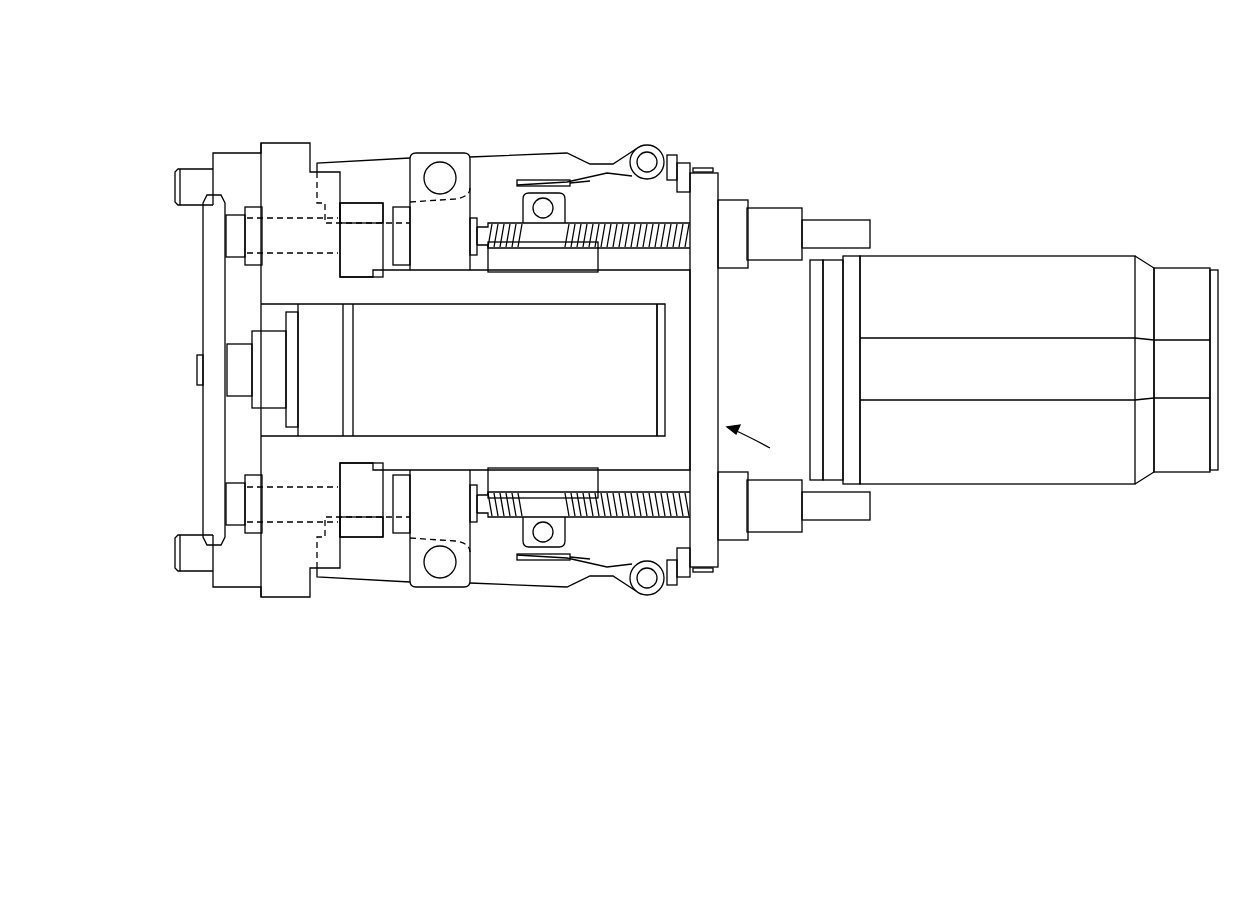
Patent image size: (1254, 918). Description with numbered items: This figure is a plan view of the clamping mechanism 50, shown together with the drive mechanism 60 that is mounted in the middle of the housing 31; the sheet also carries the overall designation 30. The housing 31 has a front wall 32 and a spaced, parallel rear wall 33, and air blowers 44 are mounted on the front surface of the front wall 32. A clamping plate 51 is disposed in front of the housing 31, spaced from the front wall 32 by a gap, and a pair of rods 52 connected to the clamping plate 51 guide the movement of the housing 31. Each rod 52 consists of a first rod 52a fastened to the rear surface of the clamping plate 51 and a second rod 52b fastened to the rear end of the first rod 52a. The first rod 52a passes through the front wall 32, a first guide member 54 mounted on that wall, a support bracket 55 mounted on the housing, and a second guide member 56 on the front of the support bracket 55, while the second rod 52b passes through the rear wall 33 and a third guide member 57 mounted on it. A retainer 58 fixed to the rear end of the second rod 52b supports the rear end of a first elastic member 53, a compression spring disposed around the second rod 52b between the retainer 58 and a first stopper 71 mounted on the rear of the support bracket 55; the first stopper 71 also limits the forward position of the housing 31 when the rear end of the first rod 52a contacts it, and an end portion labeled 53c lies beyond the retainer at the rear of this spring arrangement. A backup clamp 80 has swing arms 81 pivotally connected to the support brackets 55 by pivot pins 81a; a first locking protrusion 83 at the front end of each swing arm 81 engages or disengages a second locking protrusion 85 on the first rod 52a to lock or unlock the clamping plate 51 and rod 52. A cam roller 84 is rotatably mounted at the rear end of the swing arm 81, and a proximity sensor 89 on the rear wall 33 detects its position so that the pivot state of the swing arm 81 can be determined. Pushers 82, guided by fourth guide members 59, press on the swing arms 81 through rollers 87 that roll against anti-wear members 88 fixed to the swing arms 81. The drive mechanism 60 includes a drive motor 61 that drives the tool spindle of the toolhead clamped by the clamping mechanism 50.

The drive device 30 is at (116, 106).
The housing 31 is at (745, 527).
The front wall 32 is at (268, 165).
The rear wall 33 is at (720, 187).
The air blower 44 is at (192, 565).
The clamping mechanism 50 is at (186, 495).
The clamping plate 51 is at (207, 452).
The rod 52 is at (498, 370).
The first rod 52a is at (367, 250).
The second rod 52b is at (630, 240).
The first elastic member 53 is at (598, 225).
The screw shaft end 53c is at (873, 233).
The first guide member 54 is at (242, 265).
The support bracket 55 is at (410, 200).
The second guide member 56 is at (400, 205).
The third guide member 57 is at (748, 203).
The retainer 58 is at (797, 215).
The fourth guide member 59 is at (518, 270).
The drive mechanism 60 is at (651, 402).
The drive motor 61 is at (193, 370).
The first stopper 71 is at (488, 197).
The backup clamp 80 is at (515, 140).
The swing arm 81 is at (450, 150).
The pivot pin 81a is at (440, 165).
The pusher 82 is at (543, 178).
The first locking protrusion 83 is at (327, 212).
The cam roller 84 is at (647, 148).
The second locking protrusion 85 is at (362, 212).
The roller 87 is at (537, 560).
The anti-wear member 88 is at (556, 572).
The proximity sensor 89 is at (682, 160).